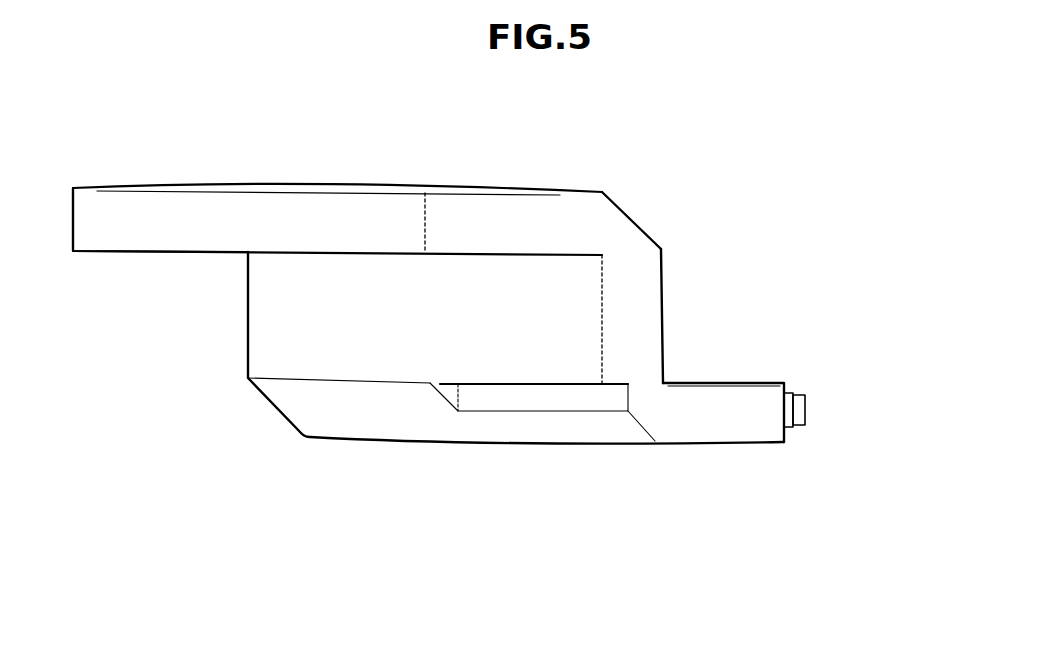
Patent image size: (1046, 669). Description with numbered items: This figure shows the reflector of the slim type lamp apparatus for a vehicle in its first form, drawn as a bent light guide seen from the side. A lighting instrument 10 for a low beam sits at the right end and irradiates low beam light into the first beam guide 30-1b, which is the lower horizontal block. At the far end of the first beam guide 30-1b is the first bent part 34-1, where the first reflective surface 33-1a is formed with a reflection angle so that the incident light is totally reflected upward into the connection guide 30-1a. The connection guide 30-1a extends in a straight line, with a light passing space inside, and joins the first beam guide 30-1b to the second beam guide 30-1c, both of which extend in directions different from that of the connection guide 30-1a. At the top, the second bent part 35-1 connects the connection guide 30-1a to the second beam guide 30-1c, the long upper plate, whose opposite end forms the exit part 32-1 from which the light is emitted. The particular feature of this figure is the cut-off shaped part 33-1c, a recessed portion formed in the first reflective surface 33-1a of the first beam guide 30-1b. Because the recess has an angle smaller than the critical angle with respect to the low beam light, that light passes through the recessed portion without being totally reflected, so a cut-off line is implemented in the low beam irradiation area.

The lighting instrument 10 is at (800, 408).
The connection guide 30-1a is at (655, 297).
The first beam guide 30-1b is at (734, 417).
The second beam guide 30-1c is at (462, 217).
The exit part 32-1 is at (158, 238).
The first reflective surface 33-1a is at (365, 413).
The cut-off shaped part 33-1c is at (512, 400).
The first bent part 34-1 is at (650, 405).
The second bent part 35-1 is at (625, 227).